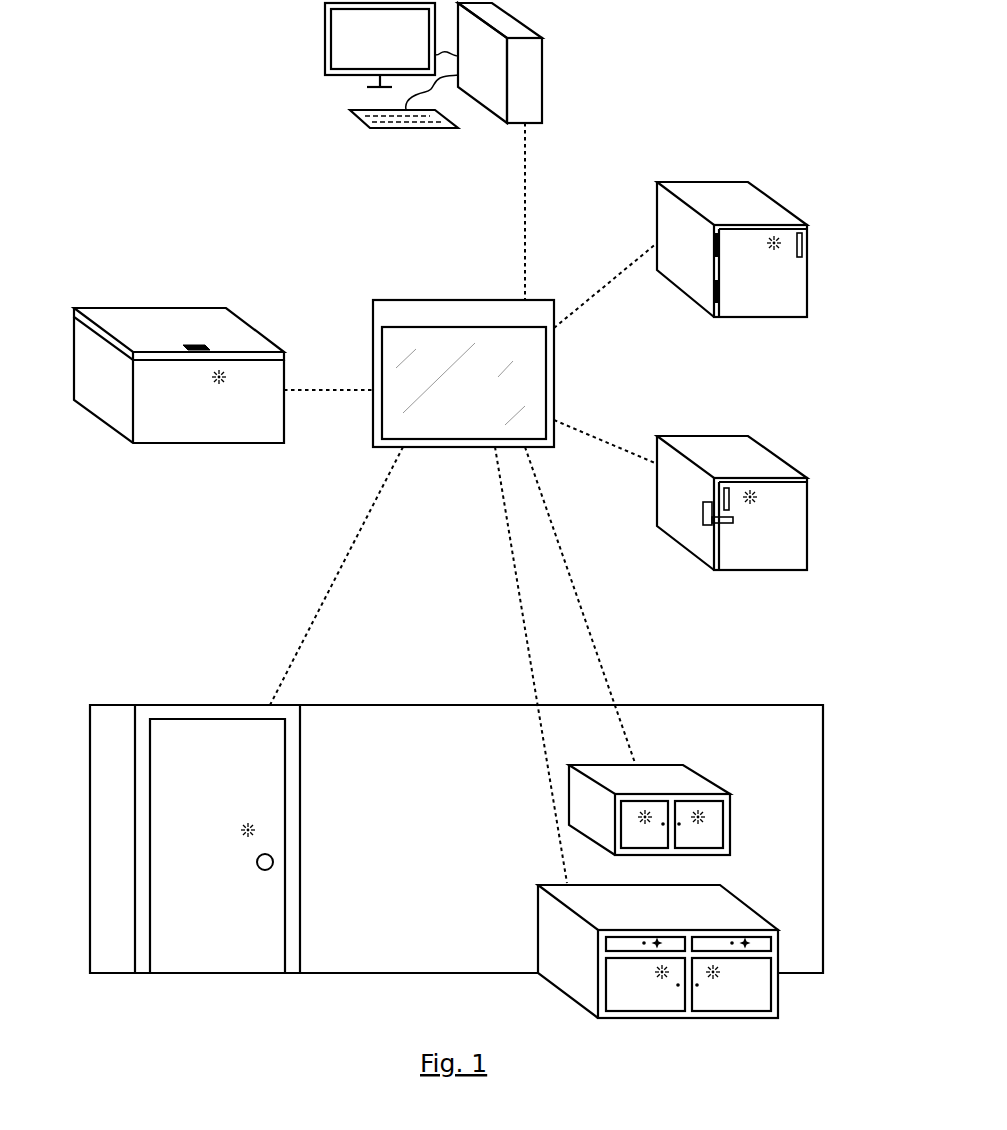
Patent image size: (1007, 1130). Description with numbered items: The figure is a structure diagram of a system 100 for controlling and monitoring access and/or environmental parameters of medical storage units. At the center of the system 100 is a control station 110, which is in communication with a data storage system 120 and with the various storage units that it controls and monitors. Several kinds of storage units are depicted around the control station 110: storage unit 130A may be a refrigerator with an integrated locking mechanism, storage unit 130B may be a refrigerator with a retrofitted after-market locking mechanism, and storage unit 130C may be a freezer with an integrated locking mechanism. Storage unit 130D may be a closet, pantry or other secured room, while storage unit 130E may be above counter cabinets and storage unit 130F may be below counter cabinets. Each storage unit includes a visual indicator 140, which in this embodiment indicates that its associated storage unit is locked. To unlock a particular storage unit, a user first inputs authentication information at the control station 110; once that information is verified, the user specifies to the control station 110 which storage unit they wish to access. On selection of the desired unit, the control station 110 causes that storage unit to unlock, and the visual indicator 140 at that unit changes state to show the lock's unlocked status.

The system 100 is at (185, 95).
The control station 110 is at (448, 299).
The data storage system 120 is at (353, 133).
The storage unit 130A is at (695, 180).
The storage unit 130B is at (695, 435).
The storage unit 130C is at (179, 359).
The storage unit 130D is at (215, 704).
The storage unit 130E is at (665, 763).
The storage unit 130F is at (779, 990).
The visual indicator 140 is at (214, 400).